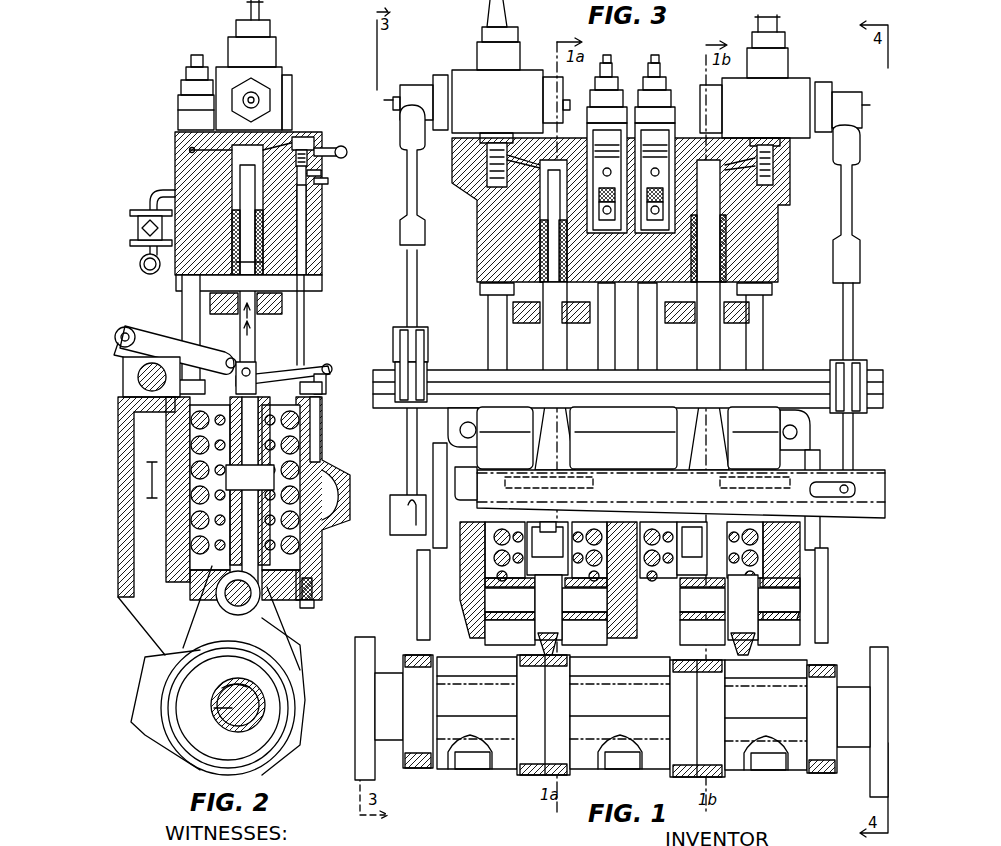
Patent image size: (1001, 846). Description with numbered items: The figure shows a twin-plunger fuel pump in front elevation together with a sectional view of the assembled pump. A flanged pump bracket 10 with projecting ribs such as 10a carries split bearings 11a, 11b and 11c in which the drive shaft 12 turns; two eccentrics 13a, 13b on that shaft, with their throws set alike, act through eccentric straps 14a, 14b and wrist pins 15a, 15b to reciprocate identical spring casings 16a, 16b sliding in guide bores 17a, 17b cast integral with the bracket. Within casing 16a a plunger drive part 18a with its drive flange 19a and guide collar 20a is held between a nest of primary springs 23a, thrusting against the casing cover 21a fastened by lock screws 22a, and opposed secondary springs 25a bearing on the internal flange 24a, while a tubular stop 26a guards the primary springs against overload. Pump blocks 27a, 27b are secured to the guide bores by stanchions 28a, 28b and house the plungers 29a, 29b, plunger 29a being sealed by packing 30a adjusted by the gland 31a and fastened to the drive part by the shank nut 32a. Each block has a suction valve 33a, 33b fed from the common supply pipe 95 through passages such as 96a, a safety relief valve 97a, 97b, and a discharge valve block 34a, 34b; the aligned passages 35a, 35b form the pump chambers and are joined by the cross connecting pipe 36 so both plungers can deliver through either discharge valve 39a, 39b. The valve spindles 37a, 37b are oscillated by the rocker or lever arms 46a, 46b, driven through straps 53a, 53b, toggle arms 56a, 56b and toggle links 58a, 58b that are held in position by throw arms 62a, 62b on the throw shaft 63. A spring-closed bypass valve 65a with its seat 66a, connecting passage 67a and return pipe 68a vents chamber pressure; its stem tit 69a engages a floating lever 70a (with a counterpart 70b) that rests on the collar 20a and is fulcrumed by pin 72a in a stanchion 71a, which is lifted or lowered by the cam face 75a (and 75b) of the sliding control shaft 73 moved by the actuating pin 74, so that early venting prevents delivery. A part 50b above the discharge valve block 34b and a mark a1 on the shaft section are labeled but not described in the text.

In FIG. 2, the flanged pump bracket 10 is at (125, 543).
In FIG. 2, the projecting rib 10a is at (138, 618).
In FIG. 1, the split bearing 11a is at (455, 770).
In FIG. 1, the split bearing 11b is at (790, 775).
In FIG. 1, the split bearing 11c is at (613, 770).
In FIG. 2, the drive shaft 12 is at (255, 705).
In FIG. 1, the drive shaft 12 is at (378, 730).
In FIG. 2, the eccentric 13a is at (185, 722).
In FIG. 1, the eccentric 13a is at (528, 750).
In FIG. 1, the eccentric 13b is at (715, 757).
In FIG. 2, the eccentric strap 14a is at (182, 755).
In FIG. 1, the eccentric strap 14a is at (530, 772).
In FIG. 1, the eccentric strap 14b is at (680, 775).
In FIG. 2, the wrist pin 15a is at (246, 600).
In FIG. 1, the wrist pin 15a is at (515, 600).
In FIG. 1, the wrist pin 15b is at (730, 600).
In FIG. 2, the spring casing 16a is at (190, 590).
In FIG. 1, the spring casing 16a is at (485, 560).
In FIG. 1, the spring casing 16b is at (765, 553).
In FIG. 2, the guide bore 17a is at (300, 575).
In FIG. 1, the guide bore 17b is at (780, 590).
In FIG. 2, the plunger drive part 18a is at (285, 455).
In FIG. 2, the drive flange 19a is at (320, 545).
In FIG. 2, the guide collar part 20a is at (190, 495).
In FIG. 2, the casing cover 21a is at (200, 605).
In FIG. 2, the lock screw 22a is at (314, 608).
In FIG. 2, the primary springs 23a is at (308, 585).
In FIG. 2, the internal flange 24a is at (158, 470).
In FIG. 2, the secondary springs 25a is at (322, 388).
In FIG. 2, the tubular stop 26a is at (205, 535).
In FIG. 1, the tubular stop 26a is at (530, 535).
In FIG. 2, the pump block 27a is at (185, 158).
In FIG. 1, the pump block 27a is at (478, 245).
In FIG. 1, the pump block 27b is at (770, 262).
In FIG. 2, the stanchion 28a is at (190, 325).
In FIG. 1, the stanchion 28a is at (492, 333).
In FIG. 1, the valve stem 28b is at (762, 333).
In FIG. 2, the plunger 29a is at (247, 183).
In FIG. 1, the plunger 29a is at (556, 368).
In FIG. 1, the plunger 29b is at (705, 360).
In FIG. 2, the packing 30a is at (262, 262).
In FIG. 2, the gland 31a is at (282, 300).
In FIG. 2, the shank nut 32a is at (235, 575).
In FIG. 1, the suction valve 33a is at (606, 210).
In FIG. 1, the suction valve 33b is at (655, 210).
In FIG. 1, the discharge valve block 34a is at (475, 82).
In FIG. 2, the discharge valve block 34b is at (292, 70).
In FIG. 1, the discharge valve block 34b is at (800, 95).
In FIG. 1, the aligned passage 35a is at (522, 165).
In FIG. 1, the aligned passage 35b is at (740, 170).
In FIG. 2, the cross connecting pipe 36 is at (341, 146).
In FIG. 1, the discharge valve spindle 37a is at (395, 110).
In FIG. 1, the actuating spindle 37b is at (865, 118).
In FIG. 1, the discharge valve 39a is at (497, 170).
In FIG. 1, the pump discharge valve 39b is at (768, 170).
In FIG. 1, the spindle rocker arm 46a is at (420, 92).
In FIG. 1, the lever arm 46b is at (845, 98).
In FIG. 2, the rod 50b is at (262, 12).
In FIG. 1, the strap 53a is at (420, 620).
In FIG. 1, the rod 53b is at (828, 632).
In FIG. 1, the toggle arm 56a is at (430, 440).
In FIG. 1, the lever 56b is at (850, 440).
In FIG. 1, the toggle link 58a is at (412, 195).
In FIG. 1, the link 58b is at (855, 215).
In FIG. 1, the throw arm 62a is at (400, 410).
In FIG. 2, the clamp 62b is at (122, 352).
In FIG. 1, the clamp 62b is at (838, 413).
In FIG. 2, the throw shaft 63 is at (142, 386).
In FIG. 1, the throw shaft 63 is at (440, 374).
In FIG. 2, the bypass valve 65a is at (306, 218).
In FIG. 2, the bypass valve seat 66a is at (321, 173).
In FIG. 2, the connecting passage 67a is at (300, 150).
In FIG. 2, the return pipe 68a is at (328, 181).
In FIG. 2, the tit 69a is at (303, 345).
In FIG. 2, the floating lever 70a is at (330, 366).
In FIG. 1, the floating lever 70a is at (505, 438).
In FIG. 1, the lever 70b is at (675, 438).
In FIG. 2, the stanchion 71a is at (316, 420).
In FIG. 2, the pin 72a is at (326, 380).
In FIG. 2, the control shaft 73 is at (330, 482).
In FIG. 1, the control shaft 73 is at (830, 485).
In FIG. 1, the actuating pin 74 is at (850, 487).
In FIG. 1, the recessed cam face 75a is at (555, 475).
In FIG. 1, the nozzle 75b is at (709, 475).
In FIG. 2, the common supply pipe 95 is at (140, 264).
In FIG. 2, the passage 96a is at (160, 205).
In FIG. 2, the relief valve 97a is at (190, 115).
In FIG. 1, the relief valve 97a is at (607, 83).
In FIG. 1, the relief valve 97b is at (655, 83).
In FIG. 2, the mark a1 is at (215, 706).